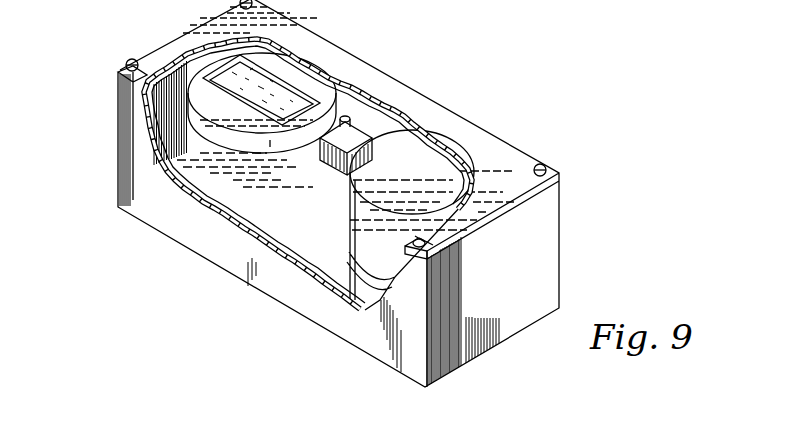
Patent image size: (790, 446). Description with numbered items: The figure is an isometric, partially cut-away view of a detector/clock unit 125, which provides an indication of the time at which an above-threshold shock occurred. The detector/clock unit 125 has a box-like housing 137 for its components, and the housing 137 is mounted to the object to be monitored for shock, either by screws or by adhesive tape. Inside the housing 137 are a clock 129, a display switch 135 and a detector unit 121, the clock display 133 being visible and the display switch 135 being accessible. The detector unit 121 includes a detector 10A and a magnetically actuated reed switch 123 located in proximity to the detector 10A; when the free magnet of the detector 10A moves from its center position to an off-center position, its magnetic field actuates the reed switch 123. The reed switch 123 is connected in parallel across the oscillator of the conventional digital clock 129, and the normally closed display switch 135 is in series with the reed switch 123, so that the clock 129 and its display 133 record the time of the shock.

The detector 10A is at (345, 318).
The detector unit 121 is at (302, 248).
The reed switch 123 is at (433, 161).
The detector/clock unit 125 is at (147, 53).
The clock 129 is at (203, 125).
The display 133 is at (290, 90).
The display switch 135 is at (370, 115).
The housing 137 is at (150, 198).